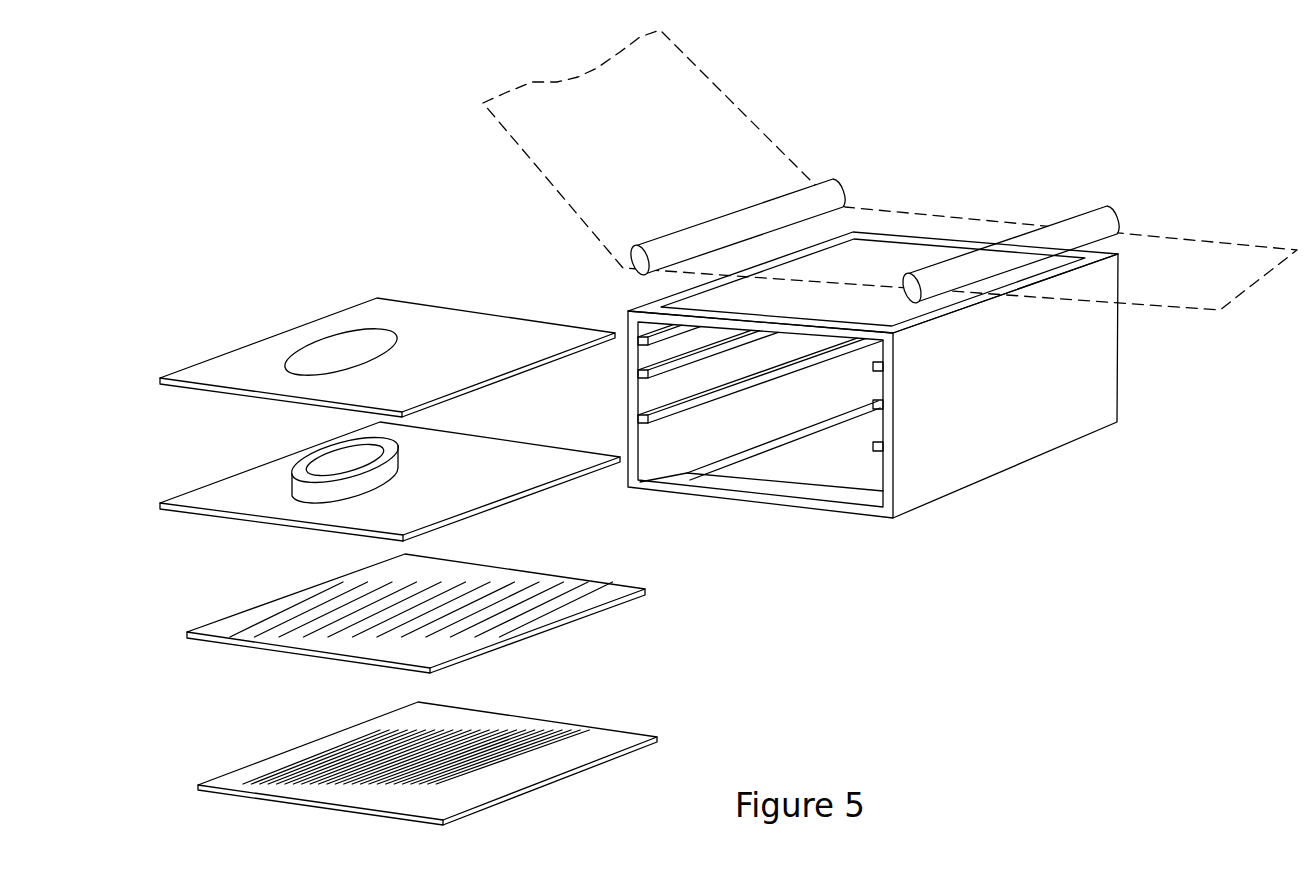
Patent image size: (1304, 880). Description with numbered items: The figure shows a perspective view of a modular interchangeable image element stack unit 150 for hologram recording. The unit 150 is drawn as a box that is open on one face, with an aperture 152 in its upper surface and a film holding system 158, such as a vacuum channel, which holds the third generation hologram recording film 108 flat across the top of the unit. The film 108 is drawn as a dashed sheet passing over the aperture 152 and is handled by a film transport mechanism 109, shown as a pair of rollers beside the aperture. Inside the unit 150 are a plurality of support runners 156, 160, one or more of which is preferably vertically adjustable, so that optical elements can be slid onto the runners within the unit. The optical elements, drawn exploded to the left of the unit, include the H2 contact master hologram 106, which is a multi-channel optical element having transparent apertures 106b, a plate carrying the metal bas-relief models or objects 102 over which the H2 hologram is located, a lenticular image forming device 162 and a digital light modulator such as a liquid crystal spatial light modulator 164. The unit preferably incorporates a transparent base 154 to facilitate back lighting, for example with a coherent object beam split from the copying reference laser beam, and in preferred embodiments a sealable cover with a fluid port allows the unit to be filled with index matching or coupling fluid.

The metal bas-relief models or objects 102 is at (390, 481).
The H2 contact master hologram 106 is at (334, 322).
The transparent apertures 106b is at (377, 352).
The H3 recording film 108 is at (647, 162).
The film transport mechanism 109 is at (829, 191).
The modular interchangeable image element stack unit 150 is at (1047, 567).
The aperture 152 is at (867, 260).
The transparent base 154 is at (838, 521).
The support runner 156 is at (696, 416).
The film holding system 158 is at (918, 313).
The support runner 160 is at (673, 343).
The lenticular image forming device 162 is at (419, 613).
The liquid crystal spatial light modulator 164 is at (468, 763).